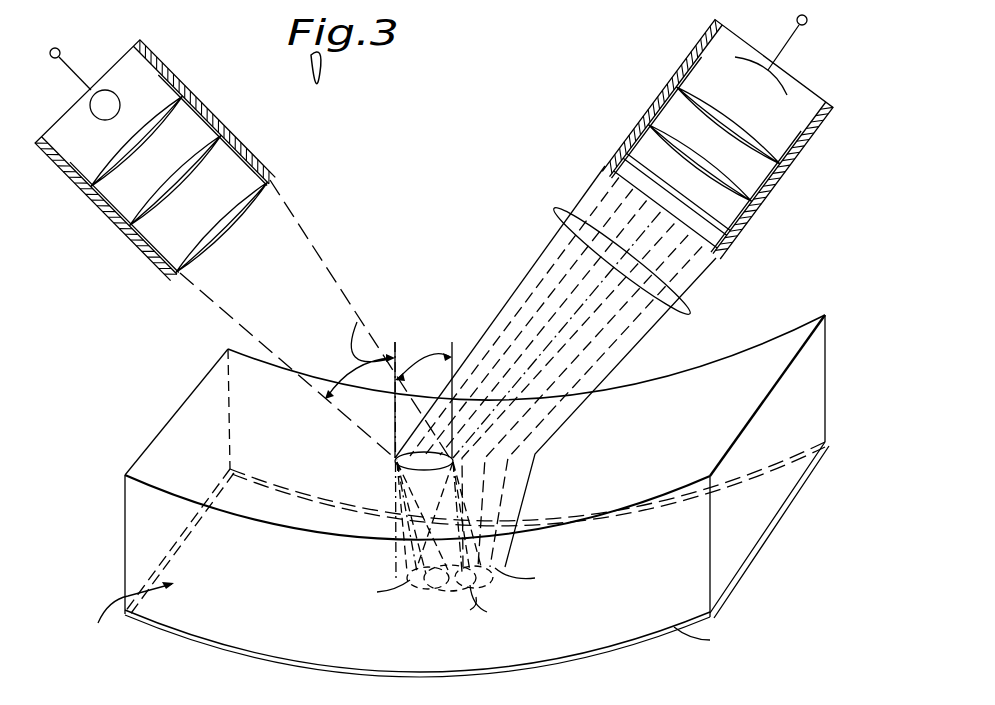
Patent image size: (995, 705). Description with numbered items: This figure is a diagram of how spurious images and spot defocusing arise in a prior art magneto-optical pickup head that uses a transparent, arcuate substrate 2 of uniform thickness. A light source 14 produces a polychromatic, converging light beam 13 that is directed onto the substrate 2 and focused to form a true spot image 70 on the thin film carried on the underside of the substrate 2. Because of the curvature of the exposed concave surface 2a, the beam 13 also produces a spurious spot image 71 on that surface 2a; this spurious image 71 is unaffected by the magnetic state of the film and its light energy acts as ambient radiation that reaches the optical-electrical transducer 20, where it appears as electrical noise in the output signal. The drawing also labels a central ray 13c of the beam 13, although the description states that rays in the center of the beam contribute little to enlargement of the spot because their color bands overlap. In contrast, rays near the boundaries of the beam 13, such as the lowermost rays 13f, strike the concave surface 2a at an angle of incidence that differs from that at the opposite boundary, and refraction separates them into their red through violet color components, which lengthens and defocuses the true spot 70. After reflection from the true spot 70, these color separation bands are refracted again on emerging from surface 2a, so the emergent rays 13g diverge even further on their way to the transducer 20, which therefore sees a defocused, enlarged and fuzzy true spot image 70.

The transparent arcuate substrate 2 is at (171, 416).
The exposed concave surface 2a is at (212, 386).
The light beam 13 is at (270, 254).
The beam center ray 13c is at (339, 294).
The lowermost rays 13f is at (232, 318).
The emergent rays 13g is at (690, 313).
The light source 14 is at (239, 118).
The optical-electrical transducer 20 is at (639, 100).
The true spot image 70 is at (410, 601).
The spurious spot image 71 is at (395, 460).